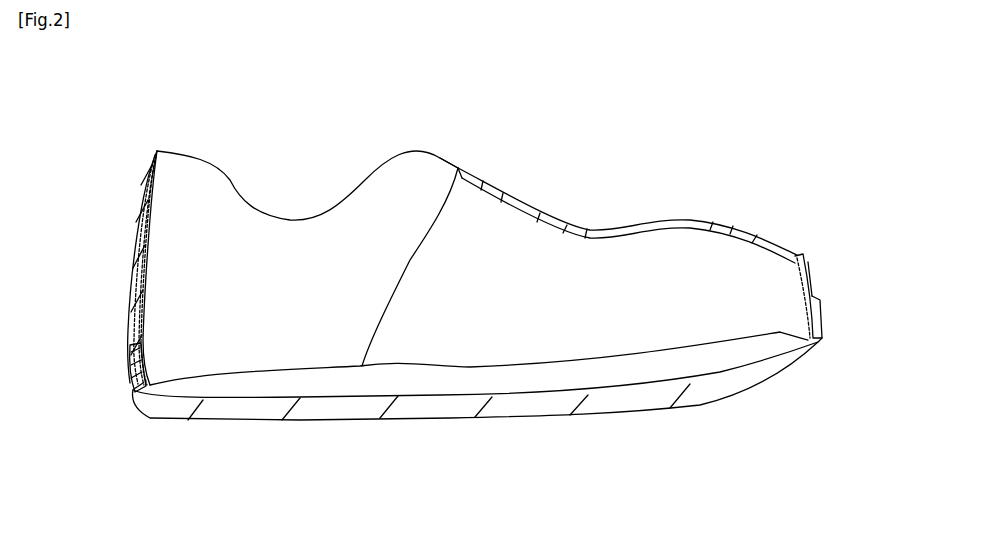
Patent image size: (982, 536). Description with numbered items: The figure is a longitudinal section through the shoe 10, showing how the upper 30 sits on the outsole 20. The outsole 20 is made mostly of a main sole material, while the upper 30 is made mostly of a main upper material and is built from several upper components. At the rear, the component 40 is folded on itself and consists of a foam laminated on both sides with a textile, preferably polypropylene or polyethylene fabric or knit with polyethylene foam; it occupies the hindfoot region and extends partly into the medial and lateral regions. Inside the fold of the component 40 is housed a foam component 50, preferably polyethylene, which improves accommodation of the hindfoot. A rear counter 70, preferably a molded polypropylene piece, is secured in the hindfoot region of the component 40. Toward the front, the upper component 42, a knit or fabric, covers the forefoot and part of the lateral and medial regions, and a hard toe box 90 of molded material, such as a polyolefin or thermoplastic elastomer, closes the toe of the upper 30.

The shoe 10 is at (108, 129).
The outsole 20 is at (608, 404).
The upper 30 is at (463, 177).
The component 40 is at (130, 290).
The upper component 42 is at (588, 225).
The foam component 50 is at (143, 191).
The rear counter 70 is at (128, 366).
The hard toe box 90 is at (806, 264).